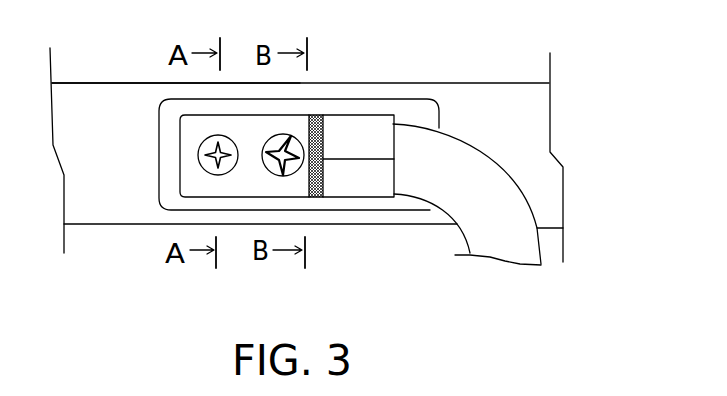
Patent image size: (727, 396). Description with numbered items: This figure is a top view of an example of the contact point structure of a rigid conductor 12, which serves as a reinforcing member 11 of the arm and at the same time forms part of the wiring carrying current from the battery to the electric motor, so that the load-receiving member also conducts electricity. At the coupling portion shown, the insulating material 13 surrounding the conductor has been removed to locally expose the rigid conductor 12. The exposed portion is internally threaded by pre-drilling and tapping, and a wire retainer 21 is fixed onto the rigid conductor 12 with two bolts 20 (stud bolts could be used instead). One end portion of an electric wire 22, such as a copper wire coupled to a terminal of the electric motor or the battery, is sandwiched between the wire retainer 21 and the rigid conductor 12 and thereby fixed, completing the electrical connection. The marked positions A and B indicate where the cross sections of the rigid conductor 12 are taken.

The reinforcing member 11 is at (483, 84).
The rigid conductor 12 is at (410, 106).
The insulating material 13 is at (136, 89).
The bolts 20 is at (205, 164).
The wire retainer 21 is at (363, 184).
The electric wire 22 is at (477, 235).